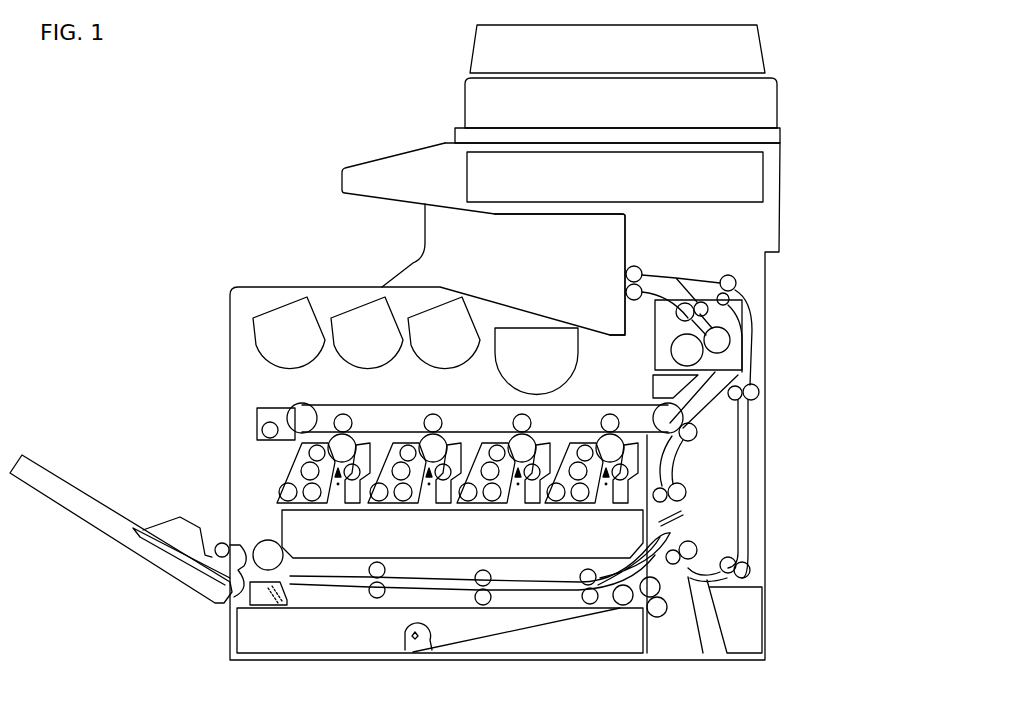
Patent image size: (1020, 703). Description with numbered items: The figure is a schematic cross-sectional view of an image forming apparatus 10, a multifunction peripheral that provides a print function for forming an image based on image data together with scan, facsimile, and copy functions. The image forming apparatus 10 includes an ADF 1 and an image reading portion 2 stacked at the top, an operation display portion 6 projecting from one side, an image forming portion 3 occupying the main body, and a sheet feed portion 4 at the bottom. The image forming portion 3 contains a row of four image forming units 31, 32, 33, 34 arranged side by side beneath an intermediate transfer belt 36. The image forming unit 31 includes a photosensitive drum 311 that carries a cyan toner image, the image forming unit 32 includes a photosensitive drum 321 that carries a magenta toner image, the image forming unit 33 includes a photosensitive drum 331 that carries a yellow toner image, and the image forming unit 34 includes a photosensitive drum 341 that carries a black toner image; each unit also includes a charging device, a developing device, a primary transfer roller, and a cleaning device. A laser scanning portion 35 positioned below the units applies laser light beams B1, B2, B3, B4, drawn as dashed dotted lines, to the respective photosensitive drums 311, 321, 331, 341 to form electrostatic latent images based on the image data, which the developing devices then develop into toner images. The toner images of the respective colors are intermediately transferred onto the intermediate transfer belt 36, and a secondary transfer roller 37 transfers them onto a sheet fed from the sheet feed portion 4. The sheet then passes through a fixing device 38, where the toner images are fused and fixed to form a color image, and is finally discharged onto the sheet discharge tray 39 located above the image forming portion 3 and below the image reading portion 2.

The image forming apparatus 10 is at (226, 70).
The ADF 1 is at (773, 63).
The image reading portion 2 is at (770, 178).
The image forming portion 3 is at (245, 308).
The sheet feed portion 4 is at (237, 626).
The operation display portion 6 is at (380, 149).
The image forming unit 31 is at (335, 416).
The image forming unit 32 is at (420, 416).
The image forming unit 33 is at (486, 418).
The image forming unit 34 is at (591, 418).
The photosensitive drum 311 is at (360, 431).
The photosensitive drum 321 is at (446, 431).
The photosensitive drum 331 is at (534, 431).
The photosensitive drum 341 is at (614, 431).
The laser scanning portion 35 is at (283, 525).
The intermediate transfer belt 36 is at (630, 400).
The secondary transfer roller 37 is at (687, 446).
The fixing device 38 is at (731, 322).
The sheet discharge tray 39 is at (500, 302).
The laser light beam B1 is at (340, 506).
The laser light beam B2 is at (431, 506).
The laser light beam B3 is at (520, 506).
The laser light beam B4 is at (608, 506).